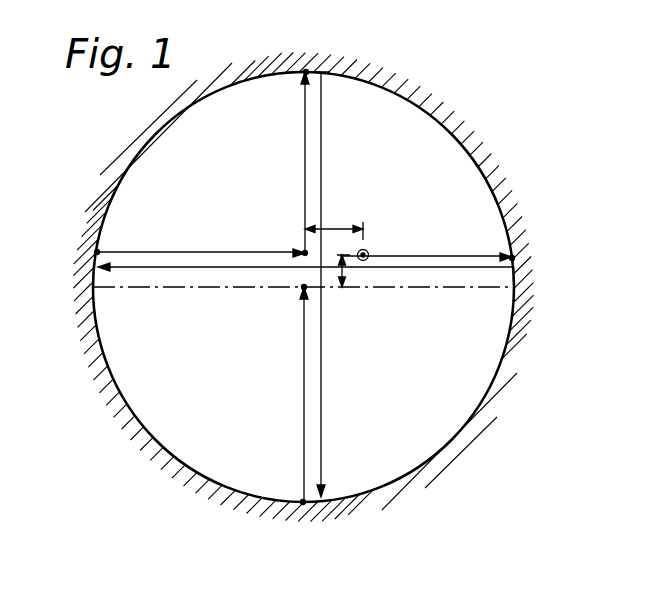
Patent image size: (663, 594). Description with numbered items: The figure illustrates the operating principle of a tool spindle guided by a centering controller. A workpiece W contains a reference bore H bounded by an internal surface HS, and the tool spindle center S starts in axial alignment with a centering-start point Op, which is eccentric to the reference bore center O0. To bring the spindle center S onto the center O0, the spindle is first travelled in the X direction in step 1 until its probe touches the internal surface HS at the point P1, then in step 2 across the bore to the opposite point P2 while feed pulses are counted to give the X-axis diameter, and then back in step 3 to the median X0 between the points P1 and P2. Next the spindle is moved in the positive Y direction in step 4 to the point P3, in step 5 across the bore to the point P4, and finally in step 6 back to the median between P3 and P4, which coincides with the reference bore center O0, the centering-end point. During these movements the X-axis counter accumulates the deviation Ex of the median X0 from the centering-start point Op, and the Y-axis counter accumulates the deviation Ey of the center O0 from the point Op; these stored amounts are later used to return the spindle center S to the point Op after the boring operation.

The centering step one 1 is at (418, 254).
The centering step two 2 is at (217, 267).
The centering step three 3 is at (212, 251).
The centering step four 4 is at (305, 155).
The centering step five 5 is at (321, 380).
The centering step six 6 is at (304, 365).
The workpiece W is at (457, 115).
The reference bore H is at (212, 174).
The internal surface HS is at (145, 415).
The tool spindle center S is at (368, 260).
The first intersecting point P1 is at (514, 262).
The second intersecting point P2 is at (97, 252).
The third intersecting point P3 is at (306, 72).
The fourth intersecting point P4 is at (306, 505).
The median Xo X0 is at (300, 249).
The reference bore center Oo O0 is at (304, 290).
The centering-start point Op is at (368, 248).
The X-axis deviation amount εx Ex is at (342, 228).
The Y-axis deviation amount εy Ey is at (345, 275).